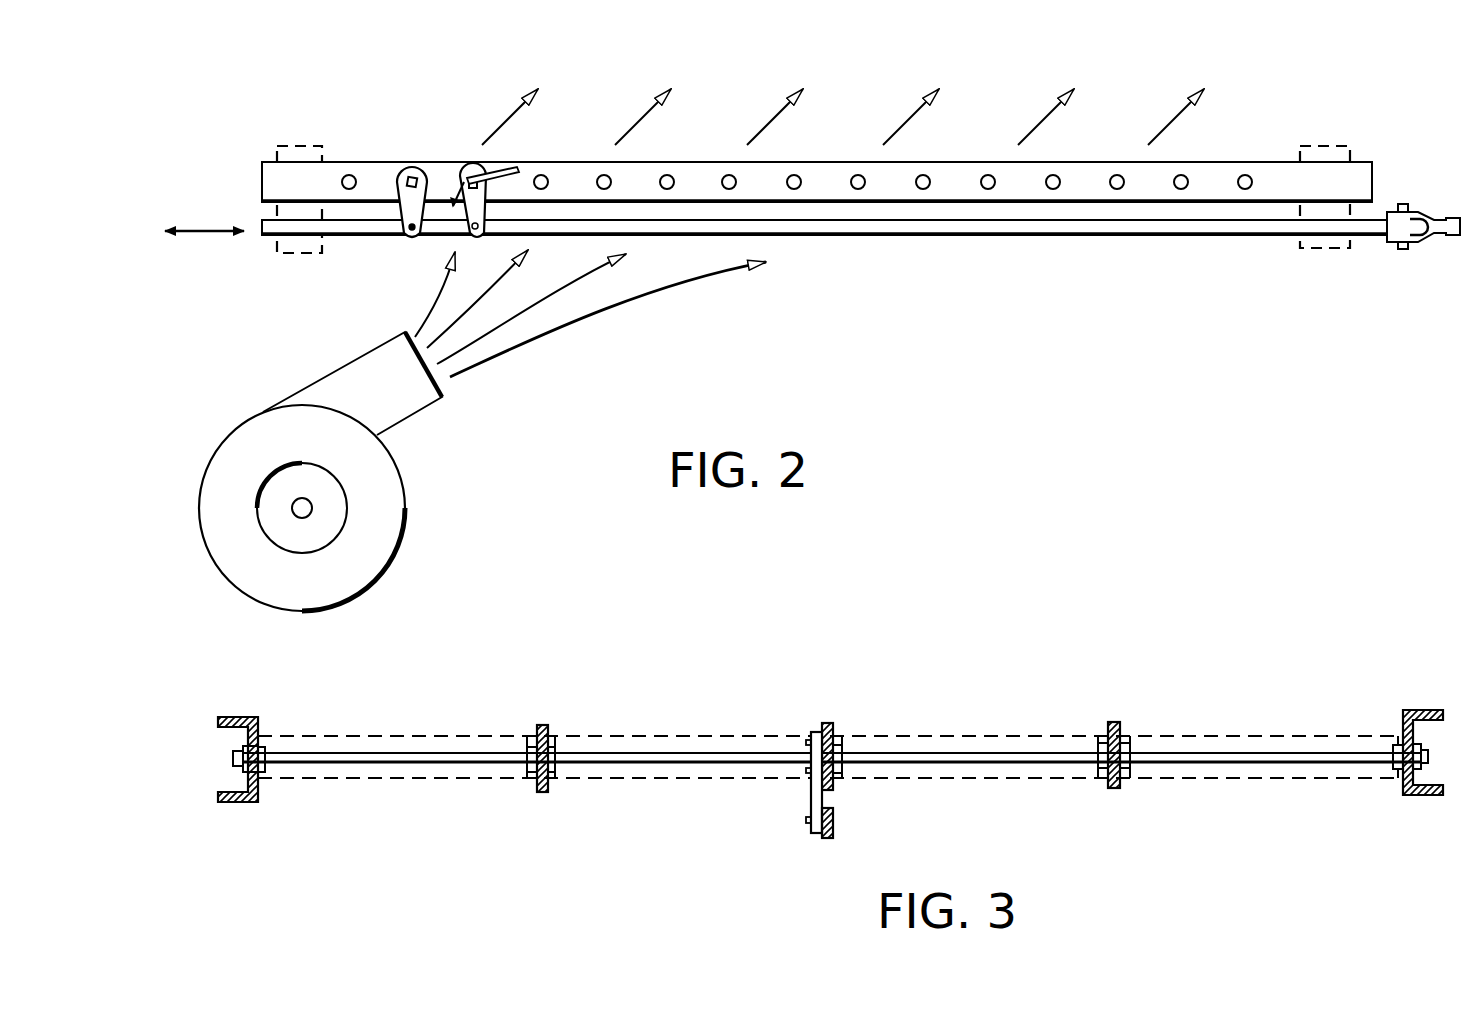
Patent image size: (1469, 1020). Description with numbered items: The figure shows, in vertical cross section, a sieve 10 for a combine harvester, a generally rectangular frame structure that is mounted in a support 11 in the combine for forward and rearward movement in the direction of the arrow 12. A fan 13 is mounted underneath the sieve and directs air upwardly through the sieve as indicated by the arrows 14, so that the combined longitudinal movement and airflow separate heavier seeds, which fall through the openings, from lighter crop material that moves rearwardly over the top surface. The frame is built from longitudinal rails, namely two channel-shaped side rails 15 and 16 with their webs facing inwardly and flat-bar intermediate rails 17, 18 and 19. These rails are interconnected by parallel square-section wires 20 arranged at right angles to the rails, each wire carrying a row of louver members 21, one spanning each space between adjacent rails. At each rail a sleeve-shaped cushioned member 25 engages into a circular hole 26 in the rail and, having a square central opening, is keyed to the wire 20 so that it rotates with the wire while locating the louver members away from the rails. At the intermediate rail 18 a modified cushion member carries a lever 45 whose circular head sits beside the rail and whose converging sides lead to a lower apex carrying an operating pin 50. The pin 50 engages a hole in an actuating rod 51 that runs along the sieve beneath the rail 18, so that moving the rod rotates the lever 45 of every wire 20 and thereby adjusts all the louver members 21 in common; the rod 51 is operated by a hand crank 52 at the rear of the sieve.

In FIG. 3, the sieve 10 is at (838, 666).
In FIG. 2, the support 11 is at (312, 138).
In FIG. 2, the arrow 12 is at (213, 238).
In FIG. 2, the fan 13 is at (406, 475).
In FIG. 2, the arrows 14 is at (492, 130).
In FIG. 3, the side rail 15 is at (238, 711).
In FIG. 3, the side rail 16 is at (1410, 706).
In FIG. 3, the intermediate rail 17 is at (530, 720).
In FIG. 2, the intermediate rail 18 is at (946, 160).
In FIG. 3, the intermediate rail 18 is at (819, 720).
In FIG. 3, the intermediate rail 19 is at (1103, 715).
In FIG. 3, the wire 20 is at (363, 748).
In FIG. 2, the louver member 21 is at (511, 160).
In FIG. 3, the louver member 21 is at (409, 731).
In FIG. 3, the cushioned member 25 is at (282, 780).
In FIG. 2, the hole 26 is at (668, 180).
In FIG. 2, the lever 45 is at (455, 175).
In FIG. 3, the lever 45 is at (806, 790).
In FIG. 3, the operating pin 50 is at (808, 822).
In FIG. 2, the actuating rod 51 is at (968, 238).
In FIG. 3, the actuating rod 51 is at (838, 818).
In FIG. 2, the hand crank 52 is at (1430, 243).